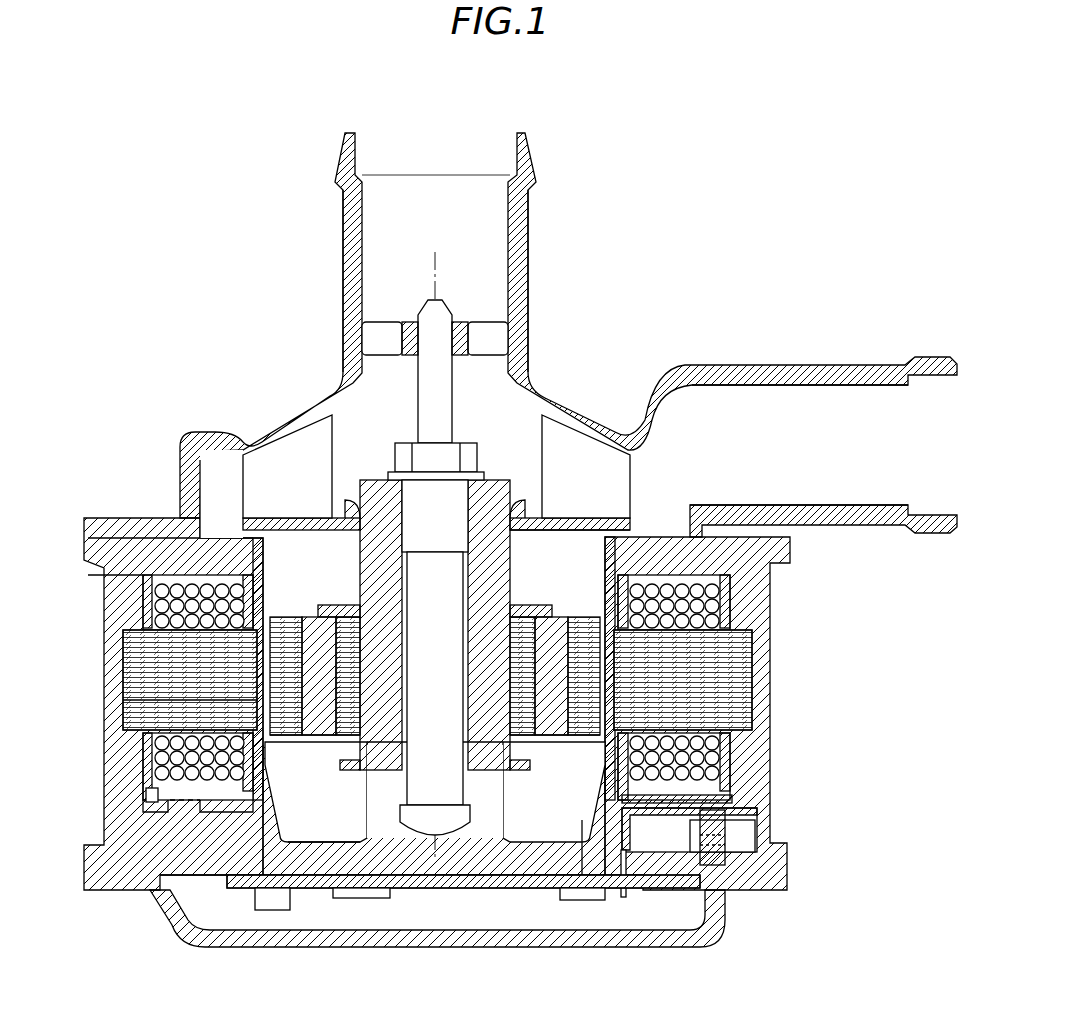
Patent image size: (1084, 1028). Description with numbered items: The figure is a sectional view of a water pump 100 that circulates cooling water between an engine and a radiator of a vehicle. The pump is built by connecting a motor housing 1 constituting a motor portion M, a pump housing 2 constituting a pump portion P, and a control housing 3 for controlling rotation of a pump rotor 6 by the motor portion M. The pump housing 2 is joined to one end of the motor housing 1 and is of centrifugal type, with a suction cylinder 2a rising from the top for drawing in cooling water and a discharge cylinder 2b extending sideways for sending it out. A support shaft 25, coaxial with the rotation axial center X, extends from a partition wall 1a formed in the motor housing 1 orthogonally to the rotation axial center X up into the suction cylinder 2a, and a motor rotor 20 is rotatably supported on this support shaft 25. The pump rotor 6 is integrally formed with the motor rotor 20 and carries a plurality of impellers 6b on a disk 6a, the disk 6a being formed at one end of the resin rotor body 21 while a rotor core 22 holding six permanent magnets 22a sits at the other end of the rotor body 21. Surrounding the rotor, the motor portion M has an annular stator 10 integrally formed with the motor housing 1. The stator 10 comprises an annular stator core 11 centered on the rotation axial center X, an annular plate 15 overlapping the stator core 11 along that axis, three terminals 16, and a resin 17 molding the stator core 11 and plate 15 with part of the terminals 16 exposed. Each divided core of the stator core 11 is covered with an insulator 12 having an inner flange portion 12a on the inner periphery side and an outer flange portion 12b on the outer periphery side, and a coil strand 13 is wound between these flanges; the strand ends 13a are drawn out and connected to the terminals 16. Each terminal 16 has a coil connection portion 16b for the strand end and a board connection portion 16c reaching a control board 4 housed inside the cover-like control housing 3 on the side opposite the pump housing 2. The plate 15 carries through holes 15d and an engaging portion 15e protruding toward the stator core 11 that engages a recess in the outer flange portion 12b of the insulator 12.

The water pump 100 is at (745, 218).
The motor housing 1 is at (775, 630).
The partition wall 1a is at (560, 889).
The pump housing 2 is at (302, 392).
The suction cylinder 2a is at (530, 233).
The discharge cylinder 2b is at (788, 364).
The control housing 3 is at (664, 950).
The control board 4 is at (408, 889).
The pump rotor 6 is at (636, 462).
The disk 6a is at (614, 524).
The impellers 6b is at (266, 452).
The stator 10 is at (758, 712).
The stator core 11 is at (128, 648).
The insulator 12 is at (140, 598).
The inner flange portion 12a is at (258, 572).
The outer flange portion 12b is at (152, 540).
The coil strand 13 is at (200, 598).
The strand end 13a is at (716, 857).
The plate 15 is at (152, 805).
The through holes 15d is at (180, 848).
The engaging portion 15e is at (148, 792).
The terminal 16 is at (744, 810).
The coil connection portion 16b is at (632, 860).
The board connection portion 16c is at (582, 900).
The resin 17 is at (126, 698).
The motor rotor 20 is at (318, 748).
The rotor body 21 is at (522, 606).
The rotor core 22 is at (586, 617).
The permanent magnets 22a is at (536, 744).
The support shaft 25 is at (486, 496).
The rotation axial center X is at (435, 541).
The pump portion P is at (224, 468).
The motor portion M is at (312, 846).